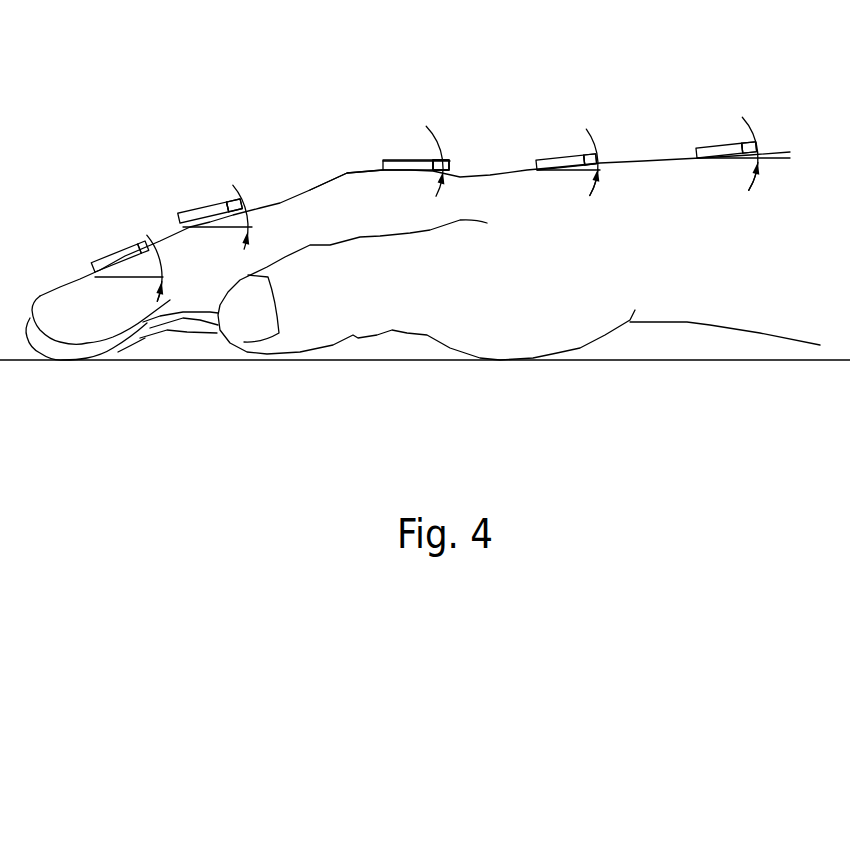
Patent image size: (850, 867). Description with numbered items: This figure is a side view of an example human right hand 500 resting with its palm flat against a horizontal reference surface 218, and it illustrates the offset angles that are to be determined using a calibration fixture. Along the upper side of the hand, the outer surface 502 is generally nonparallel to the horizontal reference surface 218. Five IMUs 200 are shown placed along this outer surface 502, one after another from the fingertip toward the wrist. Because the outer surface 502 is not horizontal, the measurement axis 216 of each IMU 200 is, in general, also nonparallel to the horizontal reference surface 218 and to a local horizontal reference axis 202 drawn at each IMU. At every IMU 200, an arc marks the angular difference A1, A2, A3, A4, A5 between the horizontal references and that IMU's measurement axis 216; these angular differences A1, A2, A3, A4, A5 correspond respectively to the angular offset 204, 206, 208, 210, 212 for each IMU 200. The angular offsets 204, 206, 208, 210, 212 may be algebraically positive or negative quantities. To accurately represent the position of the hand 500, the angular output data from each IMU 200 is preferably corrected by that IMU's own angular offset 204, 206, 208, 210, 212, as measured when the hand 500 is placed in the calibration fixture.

The right hand 500 is at (146, 92).
The outer surface 502 is at (347, 172).
The IMU 200 is at (125, 252).
The local horizontal reference axis 202 is at (747, 163).
The angular offset 204 is at (150, 270).
The angular offset 206 is at (243, 199).
The angular offset 208 is at (448, 160).
The angular offset 210 is at (592, 198).
The angular offset 212 is at (750, 192).
The measurement axis 216 is at (448, 172).
The horizontal reference surface 218 is at (655, 360).
The angular difference A1 is at (138, 230).
The angular difference A2 is at (230, 190).
The angular difference A3 is at (439, 145).
The angular difference A4 is at (588, 144).
The angular difference A5 is at (746, 130).